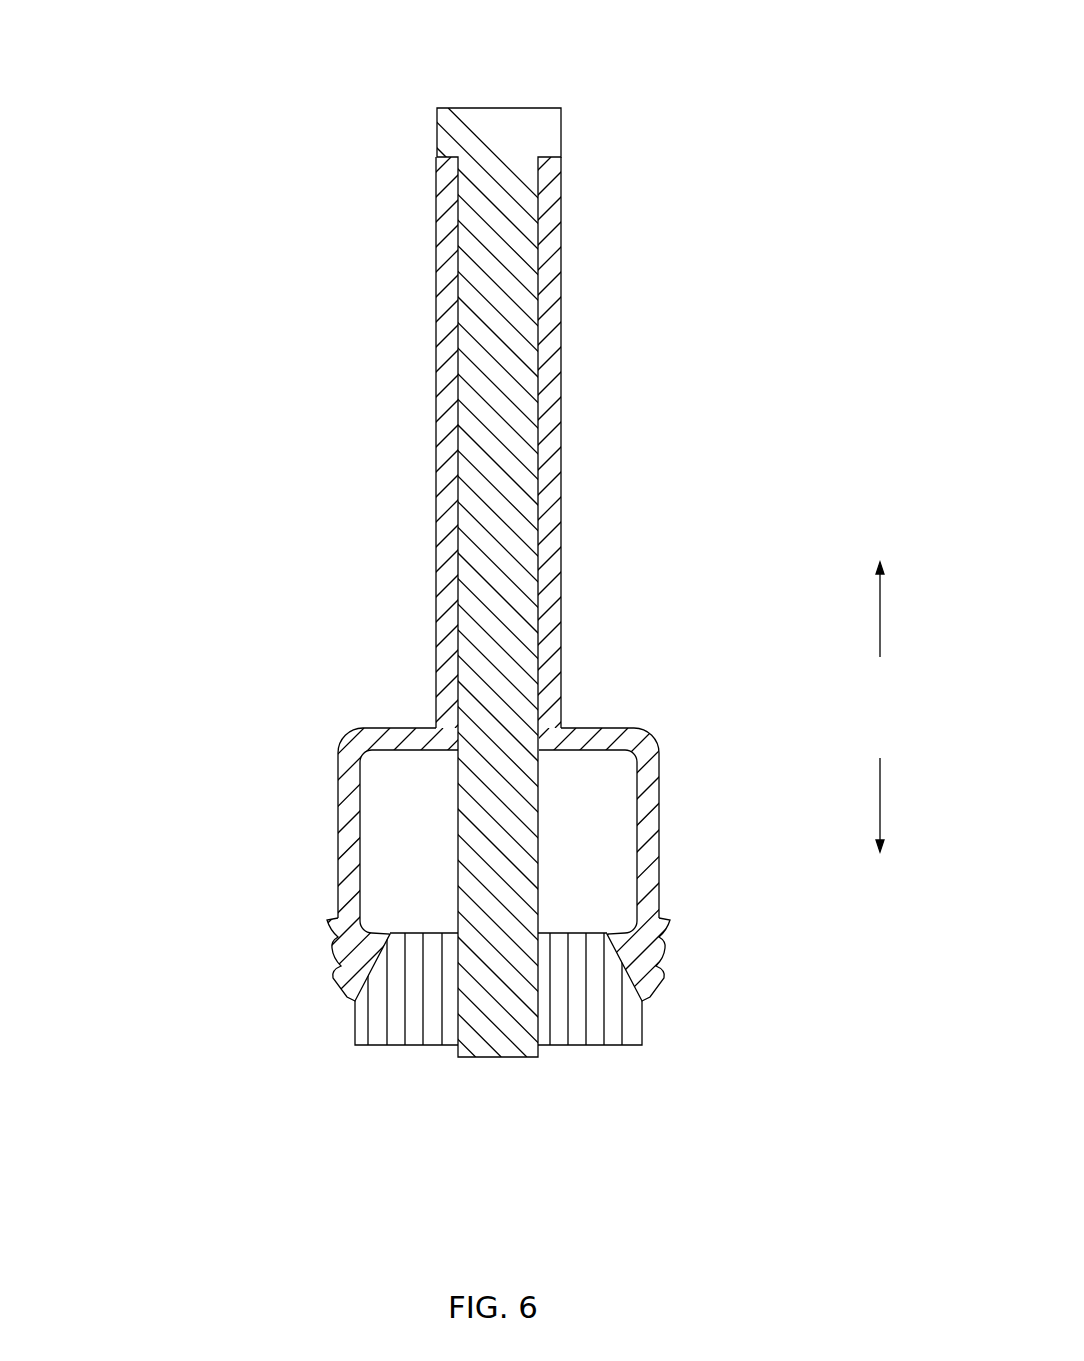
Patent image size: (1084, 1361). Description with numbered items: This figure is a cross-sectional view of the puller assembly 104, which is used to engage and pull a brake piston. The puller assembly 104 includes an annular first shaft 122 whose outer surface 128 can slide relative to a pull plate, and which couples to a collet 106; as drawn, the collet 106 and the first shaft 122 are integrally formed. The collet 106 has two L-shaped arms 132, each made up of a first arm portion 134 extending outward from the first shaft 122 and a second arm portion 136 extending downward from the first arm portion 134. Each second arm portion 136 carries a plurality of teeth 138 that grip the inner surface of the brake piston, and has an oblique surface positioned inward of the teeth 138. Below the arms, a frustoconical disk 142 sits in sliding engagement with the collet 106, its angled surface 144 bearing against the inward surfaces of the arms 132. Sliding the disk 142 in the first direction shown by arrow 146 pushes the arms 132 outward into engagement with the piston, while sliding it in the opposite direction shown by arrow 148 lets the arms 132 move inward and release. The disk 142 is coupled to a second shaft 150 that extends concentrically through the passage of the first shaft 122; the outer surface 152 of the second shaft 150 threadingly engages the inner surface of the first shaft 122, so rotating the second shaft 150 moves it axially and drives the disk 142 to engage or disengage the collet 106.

The puller assembly 104 is at (137, 80).
The collet 106 is at (492, 875).
The first shaft 122 is at (542, 597).
The outer surface 128 is at (562, 412).
The arms 132 is at (492, 810).
The first arm portion 134 is at (392, 728).
The second arm portion 136 is at (338, 840).
The teeth 138 is at (330, 955).
The disk 142 is at (517, 1009).
The angled surface 144 is at (378, 935).
The arrow 146 is at (880, 620).
The arrow 148 is at (880, 793).
The second shaft 150 is at (498, 1057).
The outer surface 152 is at (561, 135).